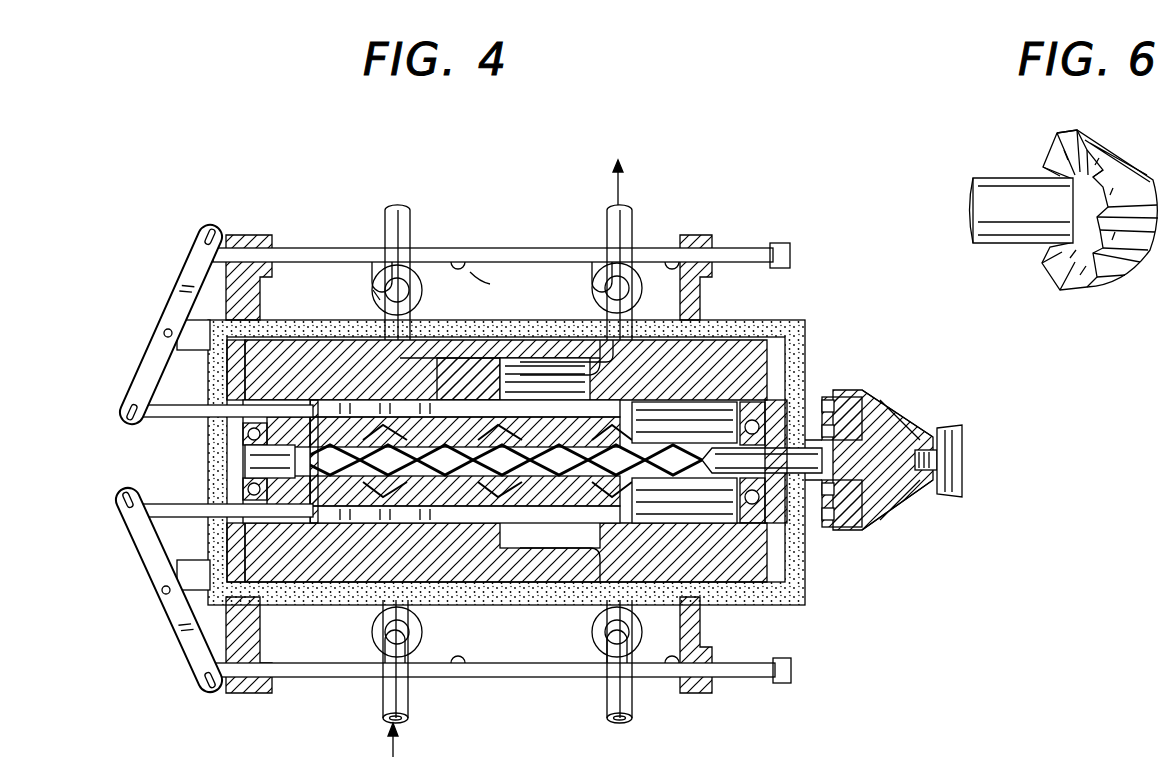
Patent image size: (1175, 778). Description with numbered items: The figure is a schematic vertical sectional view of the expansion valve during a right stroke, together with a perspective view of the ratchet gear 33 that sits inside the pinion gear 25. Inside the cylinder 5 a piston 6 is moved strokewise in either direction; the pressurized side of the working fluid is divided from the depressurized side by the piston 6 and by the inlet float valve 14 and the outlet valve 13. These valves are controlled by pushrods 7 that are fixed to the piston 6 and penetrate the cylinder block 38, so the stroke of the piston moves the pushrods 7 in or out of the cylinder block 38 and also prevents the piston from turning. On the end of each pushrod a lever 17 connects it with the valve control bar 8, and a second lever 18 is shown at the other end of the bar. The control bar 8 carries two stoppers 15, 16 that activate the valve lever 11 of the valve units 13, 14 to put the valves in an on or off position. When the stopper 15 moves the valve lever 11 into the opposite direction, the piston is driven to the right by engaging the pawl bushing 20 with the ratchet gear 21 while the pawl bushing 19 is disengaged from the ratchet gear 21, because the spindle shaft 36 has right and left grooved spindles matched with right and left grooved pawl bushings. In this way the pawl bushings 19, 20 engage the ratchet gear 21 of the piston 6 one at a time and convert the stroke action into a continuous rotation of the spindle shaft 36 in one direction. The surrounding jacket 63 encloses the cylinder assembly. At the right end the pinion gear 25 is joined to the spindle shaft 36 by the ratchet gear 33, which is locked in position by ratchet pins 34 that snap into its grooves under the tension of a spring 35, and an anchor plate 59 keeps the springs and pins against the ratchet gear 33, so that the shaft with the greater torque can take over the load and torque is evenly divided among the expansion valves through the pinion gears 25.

In FIG. 4, the cylinder 5 is at (305, 350).
In FIG. 4, the piston 6 is at (460, 365).
In FIG. 4, the pushrod 7 is at (285, 560).
In FIG. 4, the valve control bar 8 is at (510, 262).
In FIG. 4, the valve lever 11 is at (405, 282).
In FIG. 4, the outlet valve 13 is at (372, 300).
In FIG. 4, the inlet float valve 14 is at (420, 630).
In FIG. 4, the stopper 15 is at (378, 283).
In FIG. 4, the stopper 16 is at (496, 286).
In FIG. 4, the lever 17 is at (150, 360).
In FIG. 4, the lower lever 18 is at (180, 620).
In FIG. 4, the pawl bushing 19 is at (310, 412).
In FIG. 4, the pawl bushing 20 is at (550, 548).
In FIG. 4, the ratchet gear 21 is at (520, 372).
In FIG. 4, the pinion gear 25 is at (925, 440).
In FIG. 4, the ratchet gear 33 is at (875, 440).
In FIG. 6, the ratchet gear 33 is at (1130, 175).
In FIG. 4, the ratchet pin 34 is at (862, 510).
In FIG. 4, the spring 35 is at (848, 527).
In FIG. 4, the spindle shaft 36 is at (690, 450).
In FIG. 6, the spindle shaft 36 is at (1010, 175).
In FIG. 4, the cylinder block 38 is at (260, 540).
In FIG. 4, the anchor plate 59 is at (818, 405).
In FIG. 4, the insulation jacket 63 is at (805, 585).